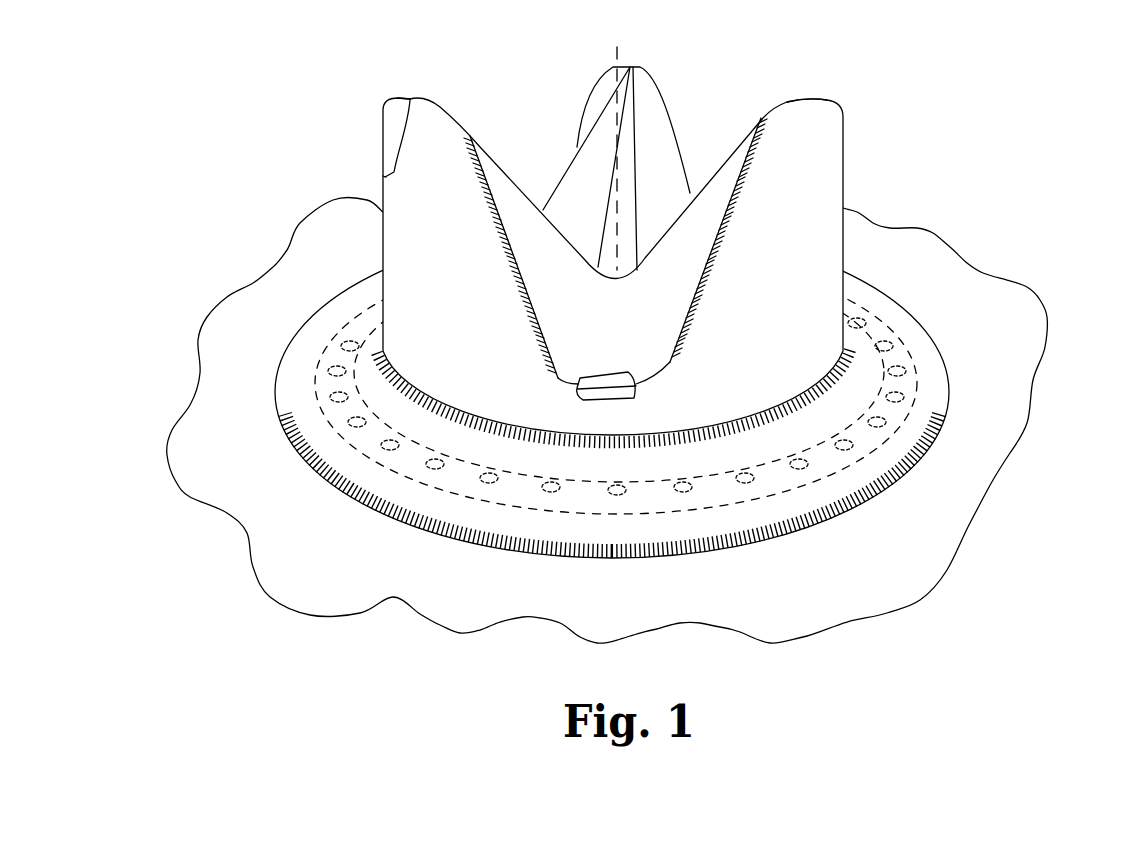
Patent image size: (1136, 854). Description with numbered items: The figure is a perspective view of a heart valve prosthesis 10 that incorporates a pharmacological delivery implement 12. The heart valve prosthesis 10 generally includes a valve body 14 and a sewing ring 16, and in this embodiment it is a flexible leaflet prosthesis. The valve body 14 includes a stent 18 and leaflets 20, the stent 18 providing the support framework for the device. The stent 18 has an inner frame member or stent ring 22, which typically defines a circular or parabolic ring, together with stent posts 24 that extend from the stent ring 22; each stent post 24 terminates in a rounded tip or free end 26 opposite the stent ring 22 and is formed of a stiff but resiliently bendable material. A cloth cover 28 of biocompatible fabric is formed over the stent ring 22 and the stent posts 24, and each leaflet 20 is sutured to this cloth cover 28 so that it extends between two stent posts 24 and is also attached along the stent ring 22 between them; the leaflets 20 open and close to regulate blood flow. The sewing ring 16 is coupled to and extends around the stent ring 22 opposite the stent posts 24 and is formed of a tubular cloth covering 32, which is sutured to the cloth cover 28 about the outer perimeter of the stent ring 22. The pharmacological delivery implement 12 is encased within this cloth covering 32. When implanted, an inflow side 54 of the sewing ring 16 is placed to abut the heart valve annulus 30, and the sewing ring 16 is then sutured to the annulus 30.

The heart valve prosthesis 10 is at (247, 95).
The pharmacological delivery implement 12 is at (936, 397).
The valve body 14 is at (866, 173).
The sewing ring 16 is at (913, 443).
The stent 18 is at (390, 113).
The leaflets 20 is at (683, 203).
The stent ring 22 is at (620, 400).
The stent posts 24 is at (392, 128).
The free end 26 is at (403, 107).
The cloth cover 28 is at (807, 128).
The heart valve annulus 30 is at (1013, 350).
The tubular cloth covering 32 is at (863, 468).
The inflow side 54 is at (827, 515).